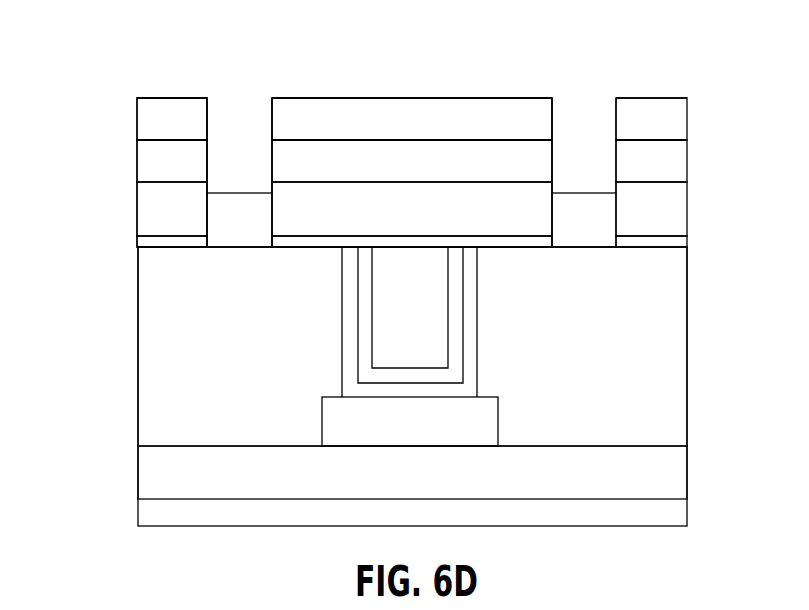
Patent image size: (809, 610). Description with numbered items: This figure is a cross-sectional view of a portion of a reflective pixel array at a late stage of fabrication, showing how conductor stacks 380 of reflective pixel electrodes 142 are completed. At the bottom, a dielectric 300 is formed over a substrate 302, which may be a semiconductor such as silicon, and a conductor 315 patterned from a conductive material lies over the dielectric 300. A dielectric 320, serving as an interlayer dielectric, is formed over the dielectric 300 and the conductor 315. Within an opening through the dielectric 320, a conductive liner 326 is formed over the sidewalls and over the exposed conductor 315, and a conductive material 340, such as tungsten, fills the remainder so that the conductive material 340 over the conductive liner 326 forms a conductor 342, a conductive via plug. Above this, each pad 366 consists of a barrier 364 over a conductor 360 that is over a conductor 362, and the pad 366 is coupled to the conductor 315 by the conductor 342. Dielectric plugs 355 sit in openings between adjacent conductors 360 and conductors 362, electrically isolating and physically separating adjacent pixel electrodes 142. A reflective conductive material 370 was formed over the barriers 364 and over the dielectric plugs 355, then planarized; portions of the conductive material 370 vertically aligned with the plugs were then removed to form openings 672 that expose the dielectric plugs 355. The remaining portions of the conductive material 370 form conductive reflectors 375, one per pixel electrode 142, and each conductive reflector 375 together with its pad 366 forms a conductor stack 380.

The reflective pixel electrode 142 is at (155, 94).
The pad 366 is at (164, 137).
The opening 672 is at (208, 118).
The conductor stack 380 is at (60, 100).
The conductive reflector 375 is at (140, 129).
The barrier 364 is at (140, 169).
The conductor 360 is at (140, 213).
The conductor 362 is at (146, 241).
The reflective conductive material 370 is at (350, 120).
The dielectric plug 355 is at (254, 227).
The conductor 342 is at (342, 292).
The conductive liner 326 is at (358, 323).
The conductive material 340 is at (395, 345).
The conductor 315 is at (427, 430).
The dielectric 320 is at (589, 402).
The dielectric 300 is at (639, 476).
The substrate 302 is at (639, 524).